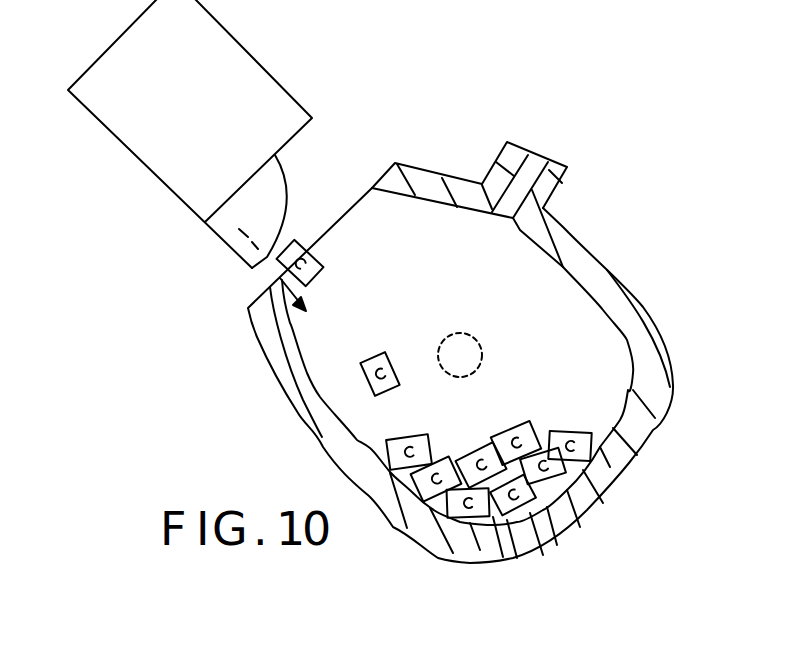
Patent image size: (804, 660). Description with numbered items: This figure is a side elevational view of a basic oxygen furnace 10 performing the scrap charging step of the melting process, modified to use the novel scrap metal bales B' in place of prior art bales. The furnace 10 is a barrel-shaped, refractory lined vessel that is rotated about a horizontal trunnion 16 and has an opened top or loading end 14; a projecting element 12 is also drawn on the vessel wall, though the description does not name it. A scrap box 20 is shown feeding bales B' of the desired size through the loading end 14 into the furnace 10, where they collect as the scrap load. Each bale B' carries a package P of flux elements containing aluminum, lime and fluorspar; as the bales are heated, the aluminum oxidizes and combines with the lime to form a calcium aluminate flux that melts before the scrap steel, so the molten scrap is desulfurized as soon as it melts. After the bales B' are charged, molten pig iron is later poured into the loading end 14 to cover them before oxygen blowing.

The basic oxygen furnace 10 is at (630, 281).
The post 12 is at (535, 163).
The opened top or loading end 14 is at (355, 208).
The horizontal trunnion 16 is at (483, 345).
The scrap box 20 is at (248, 47).
The scrap metal bale B' is at (439, 403).
The package P is at (305, 240).